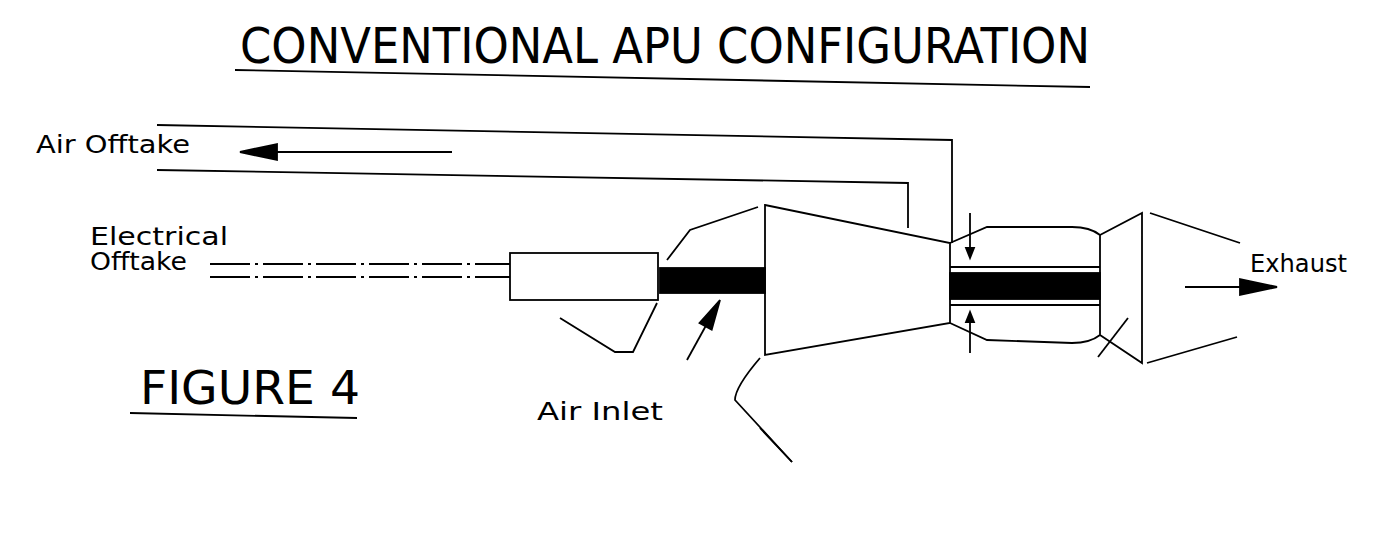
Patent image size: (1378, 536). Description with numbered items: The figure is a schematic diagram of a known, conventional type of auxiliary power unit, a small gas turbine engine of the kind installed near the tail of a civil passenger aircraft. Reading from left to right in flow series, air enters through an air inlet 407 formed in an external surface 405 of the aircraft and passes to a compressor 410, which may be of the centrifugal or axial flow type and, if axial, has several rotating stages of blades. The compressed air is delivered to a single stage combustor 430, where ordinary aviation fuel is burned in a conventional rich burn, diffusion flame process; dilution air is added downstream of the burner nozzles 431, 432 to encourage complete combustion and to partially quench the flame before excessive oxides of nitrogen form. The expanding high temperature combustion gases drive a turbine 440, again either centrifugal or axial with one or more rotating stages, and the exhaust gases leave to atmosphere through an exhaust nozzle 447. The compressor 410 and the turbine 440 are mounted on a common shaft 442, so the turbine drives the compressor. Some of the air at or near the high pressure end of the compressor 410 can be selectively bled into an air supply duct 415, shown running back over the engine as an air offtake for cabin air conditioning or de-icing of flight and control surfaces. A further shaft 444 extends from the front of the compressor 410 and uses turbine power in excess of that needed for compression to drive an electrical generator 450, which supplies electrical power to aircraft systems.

The external surface 405 is at (768, 447).
The air inlet 407 is at (730, 403).
The compressor 410 is at (863, 258).
The air supply duct 415 is at (798, 132).
The single stage combustor 430 is at (957, 326).
The burner nozzle 431 is at (975, 222).
The burner nozzle 432 is at (974, 350).
The turbine 440 is at (1140, 283).
The common shaft 442 is at (1015, 268).
The shaft 444 is at (692, 262).
The exhaust nozzle 447 is at (1183, 217).
The electrical generator 450 is at (605, 250).